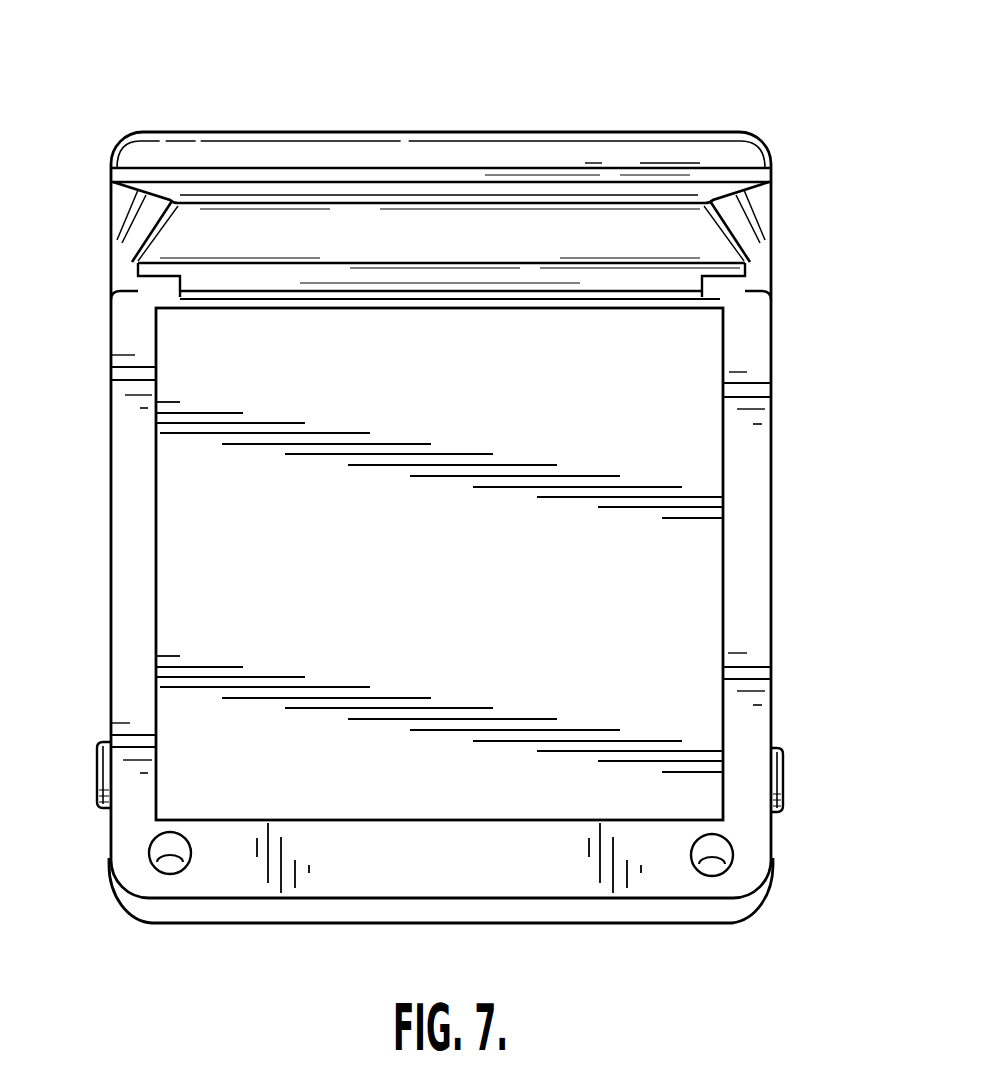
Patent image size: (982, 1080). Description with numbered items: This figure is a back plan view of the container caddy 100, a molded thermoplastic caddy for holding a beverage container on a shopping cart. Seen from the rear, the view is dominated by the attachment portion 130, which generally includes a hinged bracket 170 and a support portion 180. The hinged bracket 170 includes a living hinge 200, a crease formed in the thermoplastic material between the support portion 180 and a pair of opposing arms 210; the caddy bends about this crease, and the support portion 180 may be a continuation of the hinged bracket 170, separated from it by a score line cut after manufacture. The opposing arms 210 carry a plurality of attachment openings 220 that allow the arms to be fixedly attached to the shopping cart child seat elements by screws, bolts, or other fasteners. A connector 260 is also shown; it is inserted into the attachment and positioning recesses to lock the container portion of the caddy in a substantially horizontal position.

The container caddy 100 is at (177, 91).
The support portion 180 is at (142, 133).
The hinged bracket 170 is at (774, 208).
The living hinge 200 is at (737, 274).
The attachment portion 130 is at (775, 568).
The opposing arms 210 is at (760, 709).
The attachment openings 220 is at (178, 850).
The connector 260 is at (97, 782).